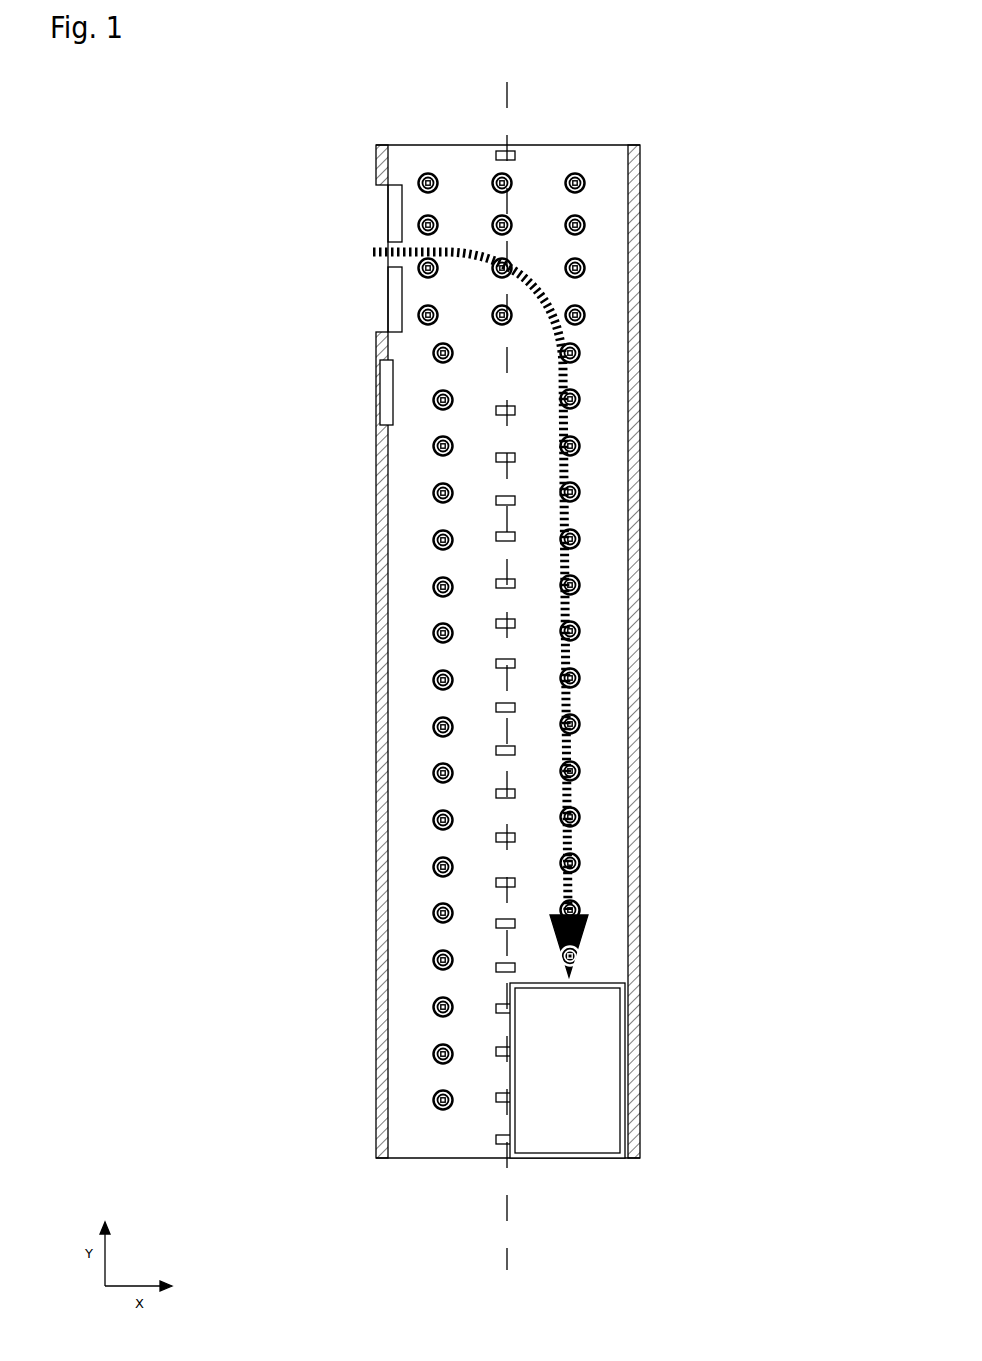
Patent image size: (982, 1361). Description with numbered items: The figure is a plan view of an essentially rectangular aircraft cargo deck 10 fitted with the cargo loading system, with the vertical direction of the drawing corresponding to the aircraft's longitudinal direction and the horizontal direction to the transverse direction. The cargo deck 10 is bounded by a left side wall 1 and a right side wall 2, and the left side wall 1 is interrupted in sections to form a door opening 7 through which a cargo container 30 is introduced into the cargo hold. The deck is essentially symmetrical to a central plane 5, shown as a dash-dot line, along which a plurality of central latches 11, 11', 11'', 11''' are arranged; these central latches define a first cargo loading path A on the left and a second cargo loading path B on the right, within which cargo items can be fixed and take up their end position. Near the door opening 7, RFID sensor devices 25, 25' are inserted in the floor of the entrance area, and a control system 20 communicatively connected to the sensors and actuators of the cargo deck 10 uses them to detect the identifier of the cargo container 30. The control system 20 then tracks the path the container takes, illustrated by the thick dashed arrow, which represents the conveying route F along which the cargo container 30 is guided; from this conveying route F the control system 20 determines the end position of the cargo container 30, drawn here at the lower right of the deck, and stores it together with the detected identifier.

The left side wall 1 is at (380, 763).
The right side wall 2 is at (635, 233).
The central plane 5 is at (482, 1202).
The door opening 7 is at (333, 249).
The cargo deck 10 is at (607, 204).
The central latch 11 is at (610, 819).
The central latch 11' is at (643, 472).
The central latch 11'' is at (669, 372).
The central latch 11''' is at (673, 116).
The control system 20 is at (388, 412).
The RFID sensor device 25 is at (315, 312).
The RFID sensor device 25' is at (315, 210).
The cargo container 30 is at (585, 1120).
The first cargo loading path A is at (450, 136).
The second cargo loading path B is at (585, 130).
The conveying route F is at (588, 613).